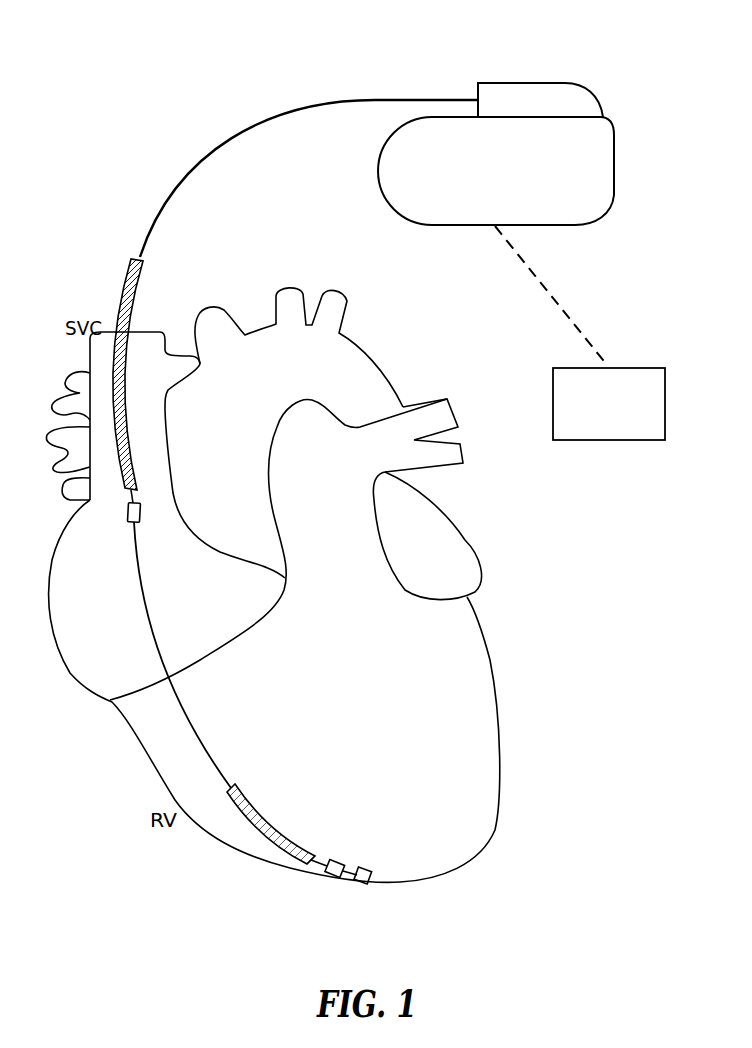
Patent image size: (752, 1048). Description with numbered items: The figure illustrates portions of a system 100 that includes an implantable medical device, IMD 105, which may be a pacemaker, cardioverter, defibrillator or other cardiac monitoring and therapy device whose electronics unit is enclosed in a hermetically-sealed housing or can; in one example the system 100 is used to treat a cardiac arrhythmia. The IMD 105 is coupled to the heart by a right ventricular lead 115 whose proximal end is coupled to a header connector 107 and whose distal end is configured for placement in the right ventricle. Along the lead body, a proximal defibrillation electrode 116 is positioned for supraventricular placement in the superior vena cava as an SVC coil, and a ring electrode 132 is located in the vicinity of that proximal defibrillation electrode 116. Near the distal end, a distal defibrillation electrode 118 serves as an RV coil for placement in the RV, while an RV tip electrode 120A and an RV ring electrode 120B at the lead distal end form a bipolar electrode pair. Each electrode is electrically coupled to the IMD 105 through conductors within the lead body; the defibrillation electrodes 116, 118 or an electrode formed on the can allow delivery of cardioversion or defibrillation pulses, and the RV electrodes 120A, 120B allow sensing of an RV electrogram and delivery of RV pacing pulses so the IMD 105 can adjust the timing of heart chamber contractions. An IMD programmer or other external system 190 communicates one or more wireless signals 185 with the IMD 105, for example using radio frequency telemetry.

The system 100 is at (358, 140).
The IMD 105 is at (618, 160).
The header connector 107 is at (601, 97).
The right ventricular lead 115 is at (231, 143).
The proximal defibrillation electrode 116 is at (121, 297).
The ring electrode 132 is at (128, 512).
The distal defibrillation electrode 118 is at (263, 841).
The RV ring electrode 120B is at (333, 877).
The RV tip electrode 120A is at (364, 886).
The wireless signals 185 is at (553, 298).
The external system 190 is at (667, 401).